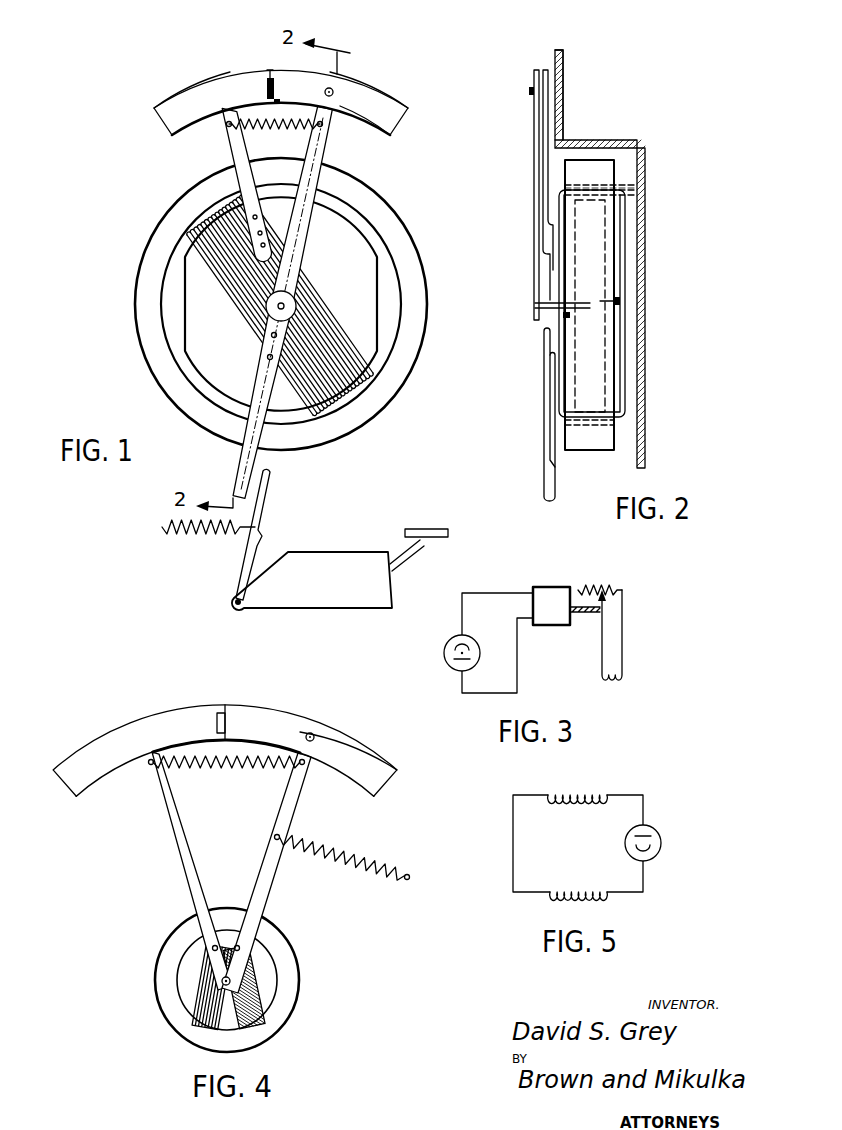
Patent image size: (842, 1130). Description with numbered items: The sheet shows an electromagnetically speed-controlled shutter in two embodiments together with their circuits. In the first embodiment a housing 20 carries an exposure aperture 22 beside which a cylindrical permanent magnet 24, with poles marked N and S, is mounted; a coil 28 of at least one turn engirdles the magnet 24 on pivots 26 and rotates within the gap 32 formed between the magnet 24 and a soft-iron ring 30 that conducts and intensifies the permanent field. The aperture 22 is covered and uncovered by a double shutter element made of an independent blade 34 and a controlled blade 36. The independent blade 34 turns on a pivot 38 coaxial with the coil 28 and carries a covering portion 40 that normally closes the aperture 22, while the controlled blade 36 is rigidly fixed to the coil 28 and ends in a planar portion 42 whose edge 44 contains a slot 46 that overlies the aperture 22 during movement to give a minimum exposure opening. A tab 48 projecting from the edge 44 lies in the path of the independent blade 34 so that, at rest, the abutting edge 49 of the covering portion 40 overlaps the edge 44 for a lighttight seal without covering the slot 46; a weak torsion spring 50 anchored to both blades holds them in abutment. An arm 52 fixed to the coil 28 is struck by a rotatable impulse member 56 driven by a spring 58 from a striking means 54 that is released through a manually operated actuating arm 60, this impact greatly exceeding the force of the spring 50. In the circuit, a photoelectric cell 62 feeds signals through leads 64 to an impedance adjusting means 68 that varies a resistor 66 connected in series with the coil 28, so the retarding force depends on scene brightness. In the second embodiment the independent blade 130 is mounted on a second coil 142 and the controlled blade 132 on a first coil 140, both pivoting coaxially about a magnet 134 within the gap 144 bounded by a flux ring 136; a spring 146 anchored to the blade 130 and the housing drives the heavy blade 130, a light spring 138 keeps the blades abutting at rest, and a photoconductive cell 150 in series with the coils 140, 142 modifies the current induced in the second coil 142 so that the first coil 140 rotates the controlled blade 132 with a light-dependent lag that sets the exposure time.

In FIG. 2, the housing means 20 is at (652, 143).
In FIG. 1, the exposure aperture 22 is at (333, 90).
In FIG. 2, the exposure aperture 22 is at (564, 87).
In FIG. 4, the exposure aperture 22 is at (314, 734).
In FIG. 1, the permanent magnet 24 is at (357, 243).
In FIG. 2, the permanent magnet 24 is at (598, 383).
In FIG. 2, the pivots 26 is at (630, 290).
In FIG. 1, the coil 28 is at (200, 258).
In FIG. 2, the coil 28 is at (622, 233).
In FIG. 3, the coil 28 is at (612, 685).
In FIG. 1, the ring 30 is at (413, 288).
In FIG. 2, the ring 30 is at (604, 173).
In FIG. 1, the gap 32 is at (335, 202).
In FIG. 2, the gap 32 is at (626, 188).
In FIG. 1, the independent blade 34 is at (390, 118).
In FIG. 2, the independent blade 34 is at (534, 183).
In FIG. 1, the controlled blade 36 is at (165, 116).
In FIG. 2, the controlled blade 36 is at (549, 113).
In FIG. 1, the pivot 38 is at (278, 308).
In FIG. 2, the pivot 38 is at (542, 282).
In FIG. 1, the covering portion 40 is at (383, 100).
In FIG. 1, the planar portion 42 is at (215, 82).
In FIG. 1, the edge 44 is at (275, 137).
In FIG. 1, the slot 46 is at (274, 82).
In FIG. 1, the tab 48 is at (274, 102).
In FIG. 2, the tab 48 is at (529, 91).
In FIG. 1, the abutting edge 49 is at (270, 70).
In FIG. 1, the torsion spring 50 is at (290, 132).
In FIG. 1, the arm 52 is at (240, 462).
In FIG. 2, the arm 52 is at (548, 480).
In FIG. 1, the means for imparting an aperture-uncovering movement 54 is at (312, 581).
In FIG. 1, the impulse member 56 is at (264, 505).
In FIG. 1, the spring 58 is at (162, 525).
In FIG. 1, the actuating arm 60 is at (427, 528).
In FIG. 3, the photoelectric cell 62 is at (444, 655).
In FIG. 3, the leads 64 is at (513, 630).
In FIG. 3, the resistor 66 is at (603, 583).
In FIG. 3, the variable impedance adjusting means 68 is at (545, 600).
In FIG. 4, the independent blade 130 is at (369, 755).
In FIG. 4, the controlled blade 132 is at (93, 750).
In FIG. 4, the magnet 134 is at (262, 968).
In FIG. 4, the flux ring 136 is at (289, 967).
In FIG. 4, the spring 138 is at (205, 765).
In FIG. 4, the first coil 140 is at (250, 1003).
In FIG. 5, the first coil 140 is at (585, 790).
In FIG. 4, the second coil 142 is at (206, 965).
In FIG. 5, the second coil 142 is at (573, 899).
In FIG. 4, the gap 144 is at (260, 1008).
In FIG. 4, the spring 146 is at (357, 878).
In FIG. 5, the photoconductive cell 150 is at (662, 837).